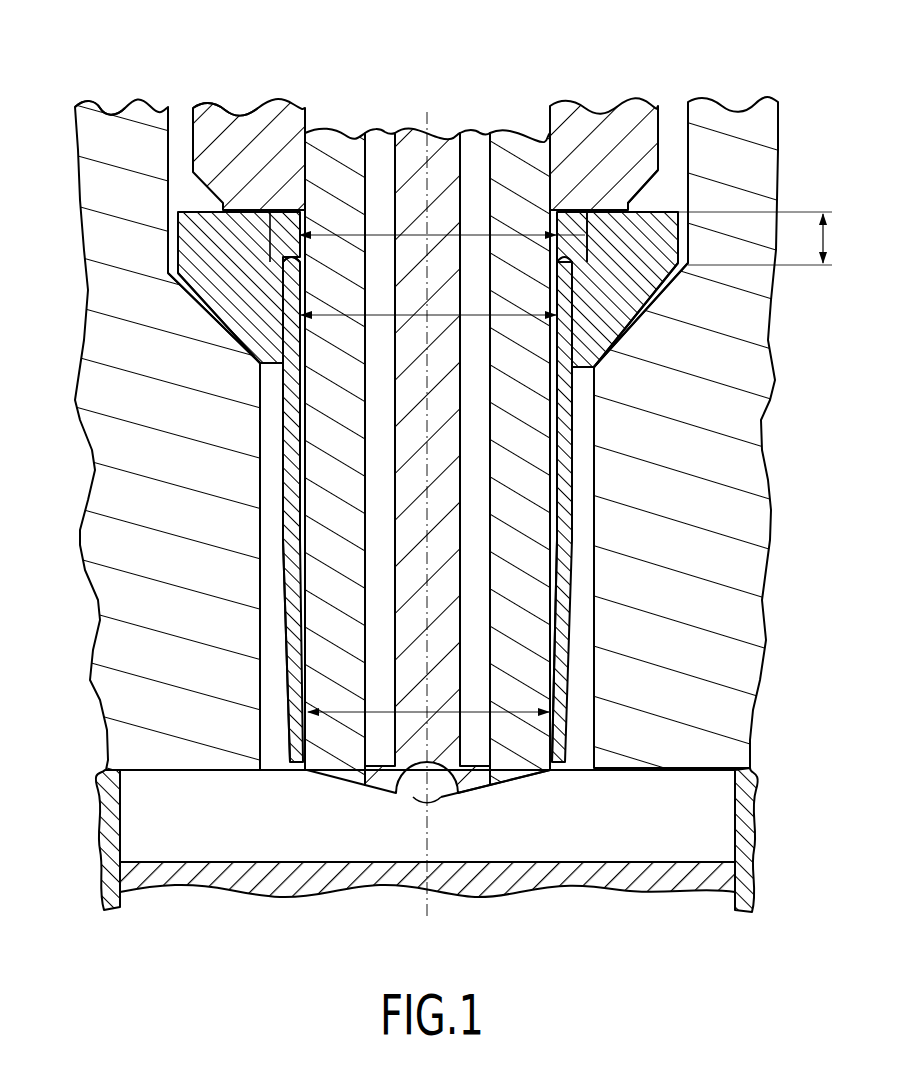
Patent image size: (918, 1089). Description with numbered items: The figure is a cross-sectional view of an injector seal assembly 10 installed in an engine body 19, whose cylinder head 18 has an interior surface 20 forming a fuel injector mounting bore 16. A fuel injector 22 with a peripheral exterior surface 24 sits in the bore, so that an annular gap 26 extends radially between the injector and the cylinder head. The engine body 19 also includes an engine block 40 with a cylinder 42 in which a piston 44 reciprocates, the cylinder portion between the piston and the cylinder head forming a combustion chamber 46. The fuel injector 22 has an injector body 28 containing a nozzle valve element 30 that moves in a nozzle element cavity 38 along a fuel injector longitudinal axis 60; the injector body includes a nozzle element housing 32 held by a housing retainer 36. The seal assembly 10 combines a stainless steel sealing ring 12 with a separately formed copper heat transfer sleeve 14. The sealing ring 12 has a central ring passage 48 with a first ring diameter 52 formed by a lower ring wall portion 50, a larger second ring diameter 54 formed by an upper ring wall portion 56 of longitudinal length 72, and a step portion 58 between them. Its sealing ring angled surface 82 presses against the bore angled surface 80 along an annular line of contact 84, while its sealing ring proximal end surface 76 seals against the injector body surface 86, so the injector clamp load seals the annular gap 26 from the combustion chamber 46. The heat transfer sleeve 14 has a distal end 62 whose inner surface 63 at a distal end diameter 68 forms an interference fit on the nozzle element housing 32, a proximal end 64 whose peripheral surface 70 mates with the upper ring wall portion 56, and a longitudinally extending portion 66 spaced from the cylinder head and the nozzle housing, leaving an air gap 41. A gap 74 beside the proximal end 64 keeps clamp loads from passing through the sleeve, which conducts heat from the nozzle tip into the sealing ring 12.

The injector seal assembly 10 is at (188, 190).
The sealing ring 12 is at (245, 205).
The heat transfer sleeve 14 is at (283, 403).
The fuel injector mounting bore 16 is at (580, 602).
The cylinder head 18 is at (103, 344).
The engine body 19 is at (68, 102).
The interior surface 20 is at (686, 125).
The fuel injector 22 is at (180, 124).
The peripheral exterior surface 24 is at (690, 167).
The annular gap 26 is at (670, 127).
The injector body 28 is at (294, 96).
The nozzle valve element 30 is at (413, 147).
The nozzle element housing 32 is at (517, 782).
The housing retainer 36 is at (233, 118).
The nozzle element cavity 38 is at (482, 503).
The engine block 40 is at (98, 847).
The air gap 41 is at (553, 530).
The cylinder 42 is at (123, 840).
The piston 44 is at (297, 862).
The combustion chamber 46 is at (667, 840).
The central ring passage 48 is at (572, 368).
The lower ring wall portion 50 is at (302, 358).
The first ring diameter 52 is at (440, 313).
The second ring diameter 54 is at (437, 235).
The upper ring wall portion 56 is at (582, 216).
The step portion 58 is at (280, 255).
The fuel injector longitudinal axis 60 is at (460, 905).
The distal end 62 is at (565, 748).
The inner surface 63 is at (310, 737).
The proximal end 64 is at (273, 255).
The longitudinally extending portion 66 is at (288, 545).
The distal end diameter 68 is at (383, 715).
The peripheral surface 70 is at (296, 235).
The longitudinal length 72 is at (825, 240).
The gap 74 is at (295, 216).
The sealing ring proximal end surface 76 is at (612, 208).
The bore angled surface 80 is at (216, 296).
The sealing ring angled surface 82 is at (210, 330).
The annular line of contact 84 is at (250, 360).
The injector body surface 86 is at (562, 233).